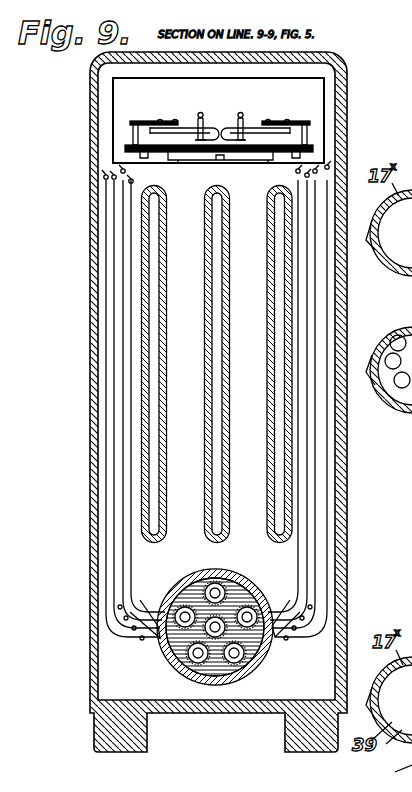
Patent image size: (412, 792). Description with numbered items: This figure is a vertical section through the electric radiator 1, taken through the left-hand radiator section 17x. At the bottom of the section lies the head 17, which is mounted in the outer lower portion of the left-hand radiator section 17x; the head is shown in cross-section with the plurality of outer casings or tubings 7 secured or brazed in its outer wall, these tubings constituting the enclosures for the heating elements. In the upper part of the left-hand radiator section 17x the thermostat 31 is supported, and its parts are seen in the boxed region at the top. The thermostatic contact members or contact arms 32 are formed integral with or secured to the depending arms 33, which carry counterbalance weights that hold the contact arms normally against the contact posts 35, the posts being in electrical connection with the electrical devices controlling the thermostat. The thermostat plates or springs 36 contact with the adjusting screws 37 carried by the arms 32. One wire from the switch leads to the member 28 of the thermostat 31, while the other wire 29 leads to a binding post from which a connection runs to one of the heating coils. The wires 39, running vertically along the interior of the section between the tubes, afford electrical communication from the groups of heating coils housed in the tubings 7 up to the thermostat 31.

The electric radiator 1 is at (84, 352).
The outer casings or tubings 7 is at (246, 591).
The head 17 is at (215, 613).
The left-hand radiator section 17x is at (90, 446).
The member of thermostat 28 is at (236, 163).
The wire 29 is at (104, 601).
The thermostat 31 is at (212, 132).
The thermostatic contact members 32 is at (144, 122).
The depending arms 33 is at (307, 141).
The contact posts 35 is at (307, 129).
The thermostat plates or springs 36 is at (202, 109).
The adjusting screws 37 is at (158, 120).
The wires 39 is at (131, 296).